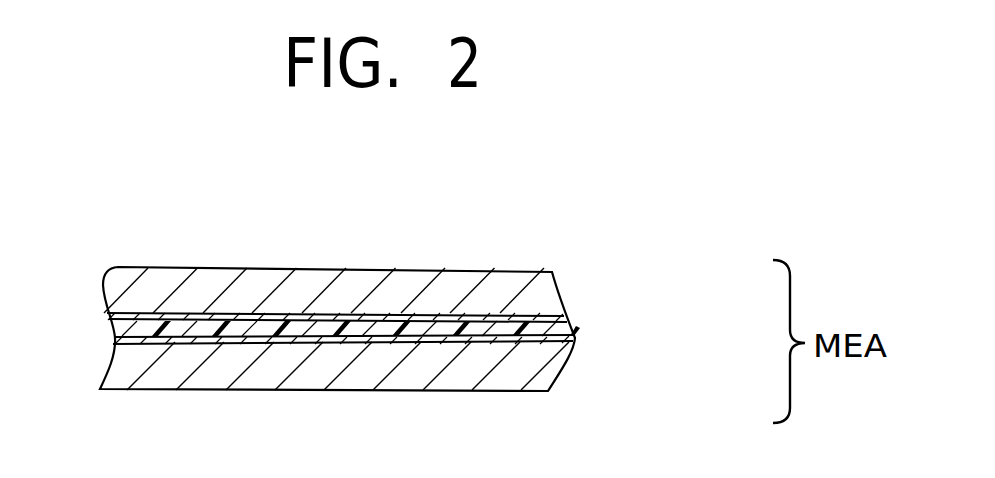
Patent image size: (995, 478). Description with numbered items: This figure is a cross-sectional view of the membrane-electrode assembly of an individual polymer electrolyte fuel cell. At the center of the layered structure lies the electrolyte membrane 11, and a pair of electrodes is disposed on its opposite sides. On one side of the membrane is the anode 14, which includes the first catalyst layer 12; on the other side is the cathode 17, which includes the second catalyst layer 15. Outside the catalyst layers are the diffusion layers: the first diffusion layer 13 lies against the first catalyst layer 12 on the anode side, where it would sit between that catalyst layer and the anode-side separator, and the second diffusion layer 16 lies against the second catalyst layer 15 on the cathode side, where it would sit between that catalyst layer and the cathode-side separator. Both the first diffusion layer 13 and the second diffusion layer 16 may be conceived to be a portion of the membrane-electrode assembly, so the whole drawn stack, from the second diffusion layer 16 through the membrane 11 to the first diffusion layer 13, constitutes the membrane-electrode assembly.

The electrolyte membrane 11 is at (577, 334).
The first catalyst layer 12 is at (525, 367).
The first diffusion layer 13 is at (548, 372).
The anode 14 is at (435, 394).
The second catalyst layer 15 is at (389, 300).
The second diffusion layer 16 is at (540, 295).
The cathode 17 is at (434, 272).